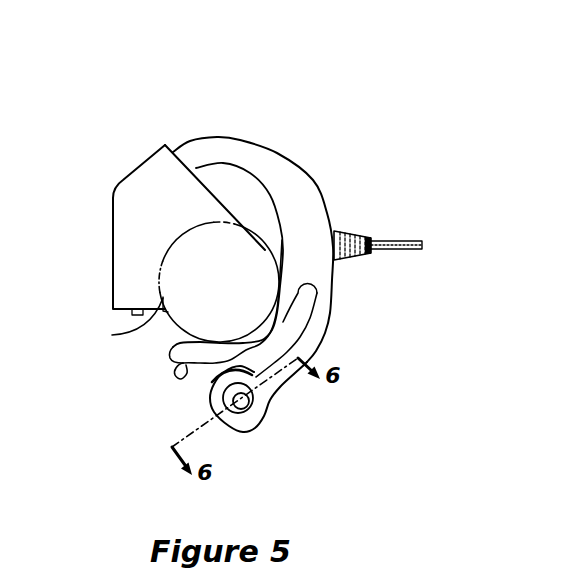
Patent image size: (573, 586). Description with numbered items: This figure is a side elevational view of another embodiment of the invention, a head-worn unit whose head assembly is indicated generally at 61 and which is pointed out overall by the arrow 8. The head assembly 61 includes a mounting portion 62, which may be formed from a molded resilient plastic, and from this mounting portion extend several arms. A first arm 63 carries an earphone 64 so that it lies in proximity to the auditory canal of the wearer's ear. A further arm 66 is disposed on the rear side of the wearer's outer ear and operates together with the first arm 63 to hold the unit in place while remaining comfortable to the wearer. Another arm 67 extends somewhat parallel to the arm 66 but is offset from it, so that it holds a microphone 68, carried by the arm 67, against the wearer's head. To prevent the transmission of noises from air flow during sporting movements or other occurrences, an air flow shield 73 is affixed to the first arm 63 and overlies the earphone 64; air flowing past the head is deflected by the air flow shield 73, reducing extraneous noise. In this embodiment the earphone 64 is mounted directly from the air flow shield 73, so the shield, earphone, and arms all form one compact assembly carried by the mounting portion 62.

The ear-worn transceiver unit 8 is at (235, 108).
The head assembly 61 is at (288, 113).
The mounting portion 62 is at (323, 178).
The first arm 63 is at (193, 157).
The earphone 64 is at (110, 335).
The further arm 66 is at (162, 360).
The further arm 67 is at (272, 390).
The microphone 68 is at (216, 375).
The air flow shield 73 is at (133, 262).